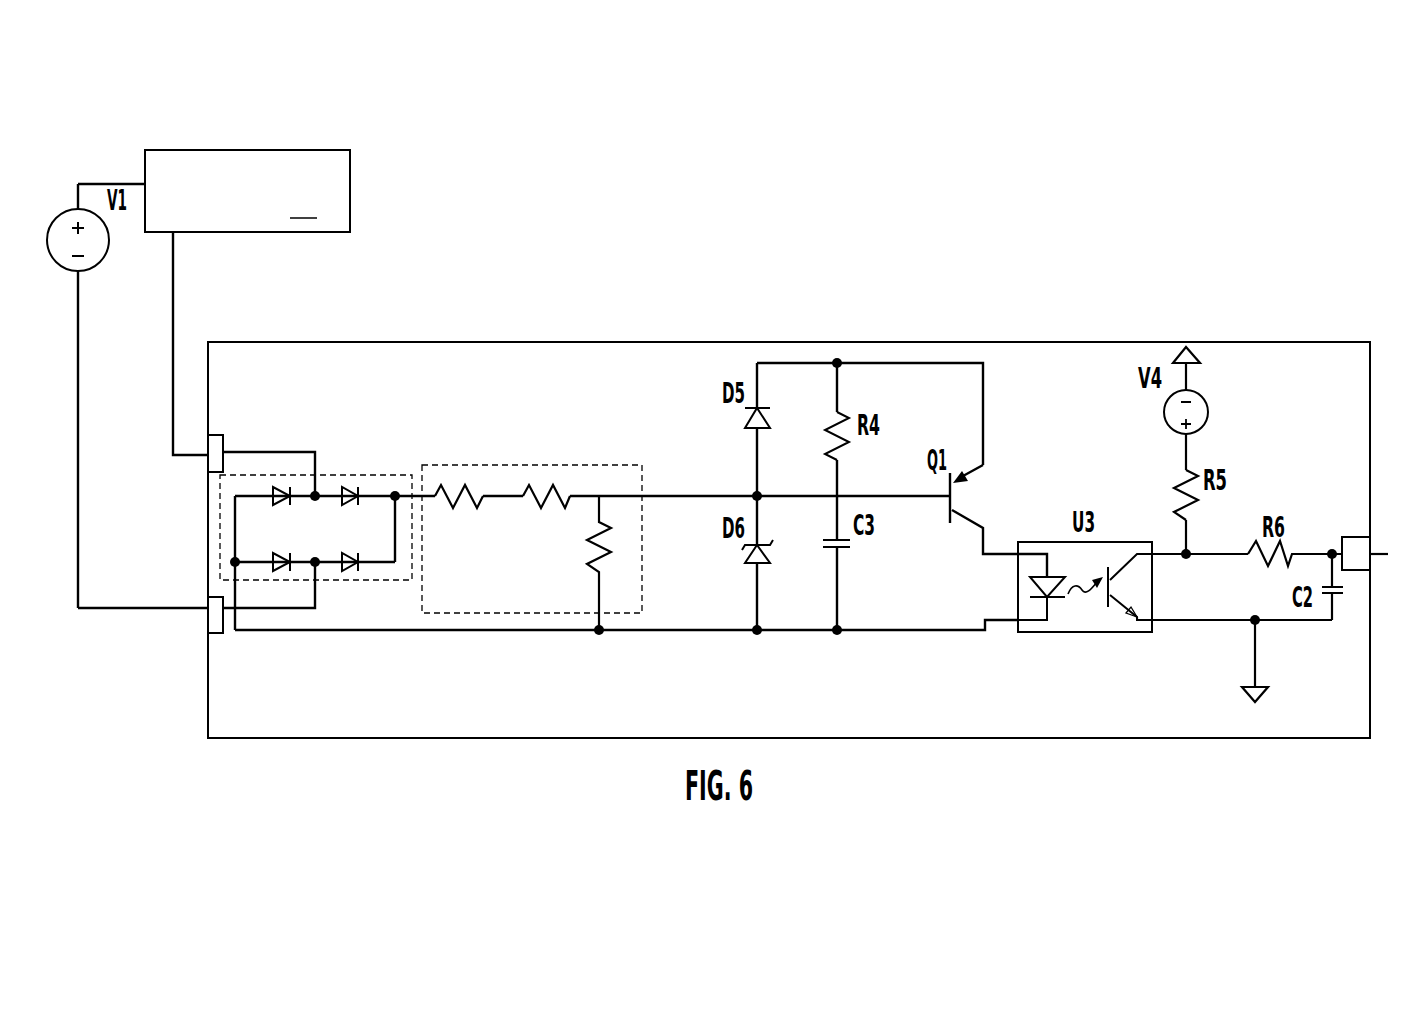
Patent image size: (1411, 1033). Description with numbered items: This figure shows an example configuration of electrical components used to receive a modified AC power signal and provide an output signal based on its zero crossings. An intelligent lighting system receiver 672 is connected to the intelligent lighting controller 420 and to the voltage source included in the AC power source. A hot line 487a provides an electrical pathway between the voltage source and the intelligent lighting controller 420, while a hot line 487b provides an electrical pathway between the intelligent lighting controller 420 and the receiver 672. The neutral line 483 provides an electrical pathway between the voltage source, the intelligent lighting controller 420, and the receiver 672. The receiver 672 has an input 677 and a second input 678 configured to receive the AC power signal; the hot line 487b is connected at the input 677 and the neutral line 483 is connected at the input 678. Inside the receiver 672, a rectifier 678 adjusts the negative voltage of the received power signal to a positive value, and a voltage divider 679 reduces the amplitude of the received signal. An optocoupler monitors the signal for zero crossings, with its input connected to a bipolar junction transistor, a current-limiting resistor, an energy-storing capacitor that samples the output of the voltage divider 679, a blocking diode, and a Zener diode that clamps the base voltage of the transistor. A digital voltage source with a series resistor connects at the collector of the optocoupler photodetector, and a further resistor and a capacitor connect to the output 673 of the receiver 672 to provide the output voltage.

The hot line 487a is at (102, 182).
The hot line 487b is at (173, 283).
The intelligent lighting controller 420 is at (247, 191).
The neutral line 483 is at (153, 612).
The intelligent lighting system receiver 672 is at (803, 731).
The input 677 is at (216, 433).
The rectifier 678 is at (342, 475).
The voltage divider 679 is at (538, 465).
The output 673 is at (1357, 537).